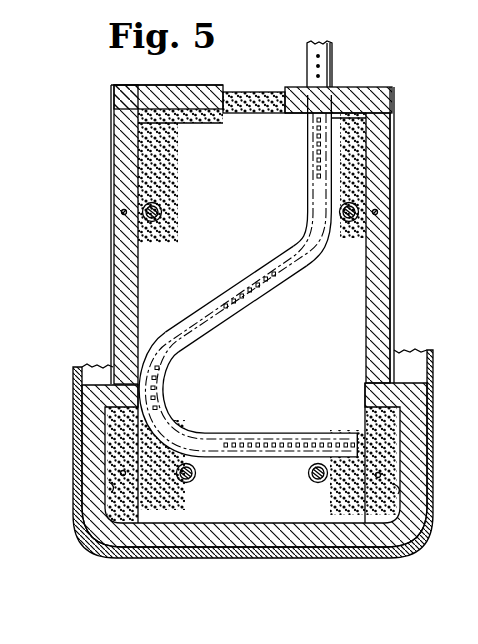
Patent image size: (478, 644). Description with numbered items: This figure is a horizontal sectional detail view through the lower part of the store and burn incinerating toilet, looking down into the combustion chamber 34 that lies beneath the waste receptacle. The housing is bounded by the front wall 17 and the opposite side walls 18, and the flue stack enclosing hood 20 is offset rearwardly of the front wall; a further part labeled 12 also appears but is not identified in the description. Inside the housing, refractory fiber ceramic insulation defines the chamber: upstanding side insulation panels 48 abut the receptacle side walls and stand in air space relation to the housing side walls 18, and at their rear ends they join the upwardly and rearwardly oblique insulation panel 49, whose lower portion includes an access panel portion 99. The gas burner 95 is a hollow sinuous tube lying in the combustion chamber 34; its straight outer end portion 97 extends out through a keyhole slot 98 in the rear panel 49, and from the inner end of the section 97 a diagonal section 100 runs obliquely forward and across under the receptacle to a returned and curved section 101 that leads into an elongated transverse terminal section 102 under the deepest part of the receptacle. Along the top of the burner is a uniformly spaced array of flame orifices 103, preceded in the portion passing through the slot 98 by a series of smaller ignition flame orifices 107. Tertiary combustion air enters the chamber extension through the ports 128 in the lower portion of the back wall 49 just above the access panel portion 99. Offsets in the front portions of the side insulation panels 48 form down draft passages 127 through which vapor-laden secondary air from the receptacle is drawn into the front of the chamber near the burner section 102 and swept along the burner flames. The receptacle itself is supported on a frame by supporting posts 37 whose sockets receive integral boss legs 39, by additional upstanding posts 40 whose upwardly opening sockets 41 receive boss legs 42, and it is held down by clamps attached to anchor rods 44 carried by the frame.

The flue stack enclosing hood 20 is at (257, 289).
The solar collector unit 12 is at (257, 439).
The front wall 17 is at (126, 560).
The side walls 18 is at (433, 398).
The combustion chamber 34 is at (243, 234).
The side insulation panels 48 is at (350, 282).
The oblique insulation panel 49 is at (317, 112).
The access panel portion 99 is at (392, 112).
The tertiary air inlet ports 128 is at (231, 92).
The gas burner 95 is at (251, 262).
The outer end portion 97 is at (307, 64).
The key hole slot 98 is at (251, 243).
The diagonal section 100 is at (213, 310).
The returned and curved section 101 is at (166, 400).
The inner terminal transverse section 102 is at (287, 436).
The flame orifices 103 is at (318, 160).
The ignition flame orifices 107 is at (318, 130).
The upstanding posts 40 is at (282, 222).
The sockets 41 is at (160, 220).
The boss legs 42 is at (166, 202).
The supporting posts 37 is at (253, 476).
The integral boss legs 39 is at (196, 480).
The anchor rods 44 is at (120, 473).
The down draft passages 127 is at (110, 489).